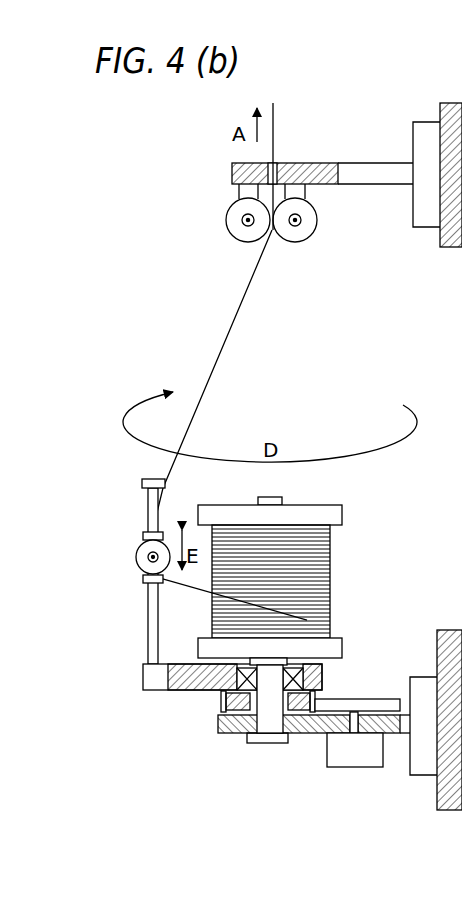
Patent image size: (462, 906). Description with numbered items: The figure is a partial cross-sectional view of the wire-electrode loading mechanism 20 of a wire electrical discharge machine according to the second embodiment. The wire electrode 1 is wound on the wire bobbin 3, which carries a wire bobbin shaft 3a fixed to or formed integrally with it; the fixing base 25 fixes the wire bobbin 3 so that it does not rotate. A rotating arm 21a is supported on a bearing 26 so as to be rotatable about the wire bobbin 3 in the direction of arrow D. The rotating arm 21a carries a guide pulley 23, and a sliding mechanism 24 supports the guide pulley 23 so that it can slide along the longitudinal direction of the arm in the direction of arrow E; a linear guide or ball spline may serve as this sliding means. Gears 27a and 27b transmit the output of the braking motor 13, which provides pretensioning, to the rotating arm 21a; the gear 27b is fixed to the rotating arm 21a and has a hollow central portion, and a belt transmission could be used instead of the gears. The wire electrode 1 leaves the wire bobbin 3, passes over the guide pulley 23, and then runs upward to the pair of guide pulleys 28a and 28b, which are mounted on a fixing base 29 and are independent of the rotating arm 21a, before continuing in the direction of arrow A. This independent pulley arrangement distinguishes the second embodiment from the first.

The wire electrode 1 is at (276, 130).
The fixing base 29 is at (364, 172).
The guide pulley 28a is at (228, 220).
The guide pulley 28b is at (318, 220).
The wire-electrode loading mechanism 20 is at (418, 500).
The wire bobbin 3 is at (343, 517).
The wire bobbin shaft 3a is at (268, 706).
The sliding mechanism 24 is at (150, 535).
The guide pulley 23 is at (140, 556).
The rotating arm 21a is at (148, 617).
The bearing 26 is at (304, 680).
The gear 27a is at (376, 699).
The gear 27b is at (221, 702).
The braking motor 13 is at (360, 760).
The fixing base 25 is at (424, 772).